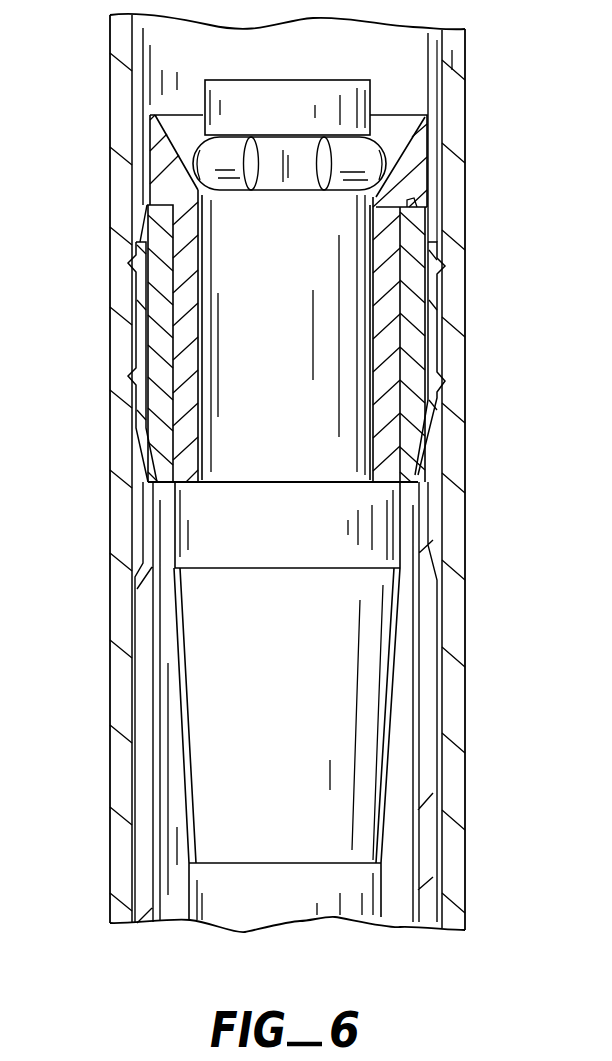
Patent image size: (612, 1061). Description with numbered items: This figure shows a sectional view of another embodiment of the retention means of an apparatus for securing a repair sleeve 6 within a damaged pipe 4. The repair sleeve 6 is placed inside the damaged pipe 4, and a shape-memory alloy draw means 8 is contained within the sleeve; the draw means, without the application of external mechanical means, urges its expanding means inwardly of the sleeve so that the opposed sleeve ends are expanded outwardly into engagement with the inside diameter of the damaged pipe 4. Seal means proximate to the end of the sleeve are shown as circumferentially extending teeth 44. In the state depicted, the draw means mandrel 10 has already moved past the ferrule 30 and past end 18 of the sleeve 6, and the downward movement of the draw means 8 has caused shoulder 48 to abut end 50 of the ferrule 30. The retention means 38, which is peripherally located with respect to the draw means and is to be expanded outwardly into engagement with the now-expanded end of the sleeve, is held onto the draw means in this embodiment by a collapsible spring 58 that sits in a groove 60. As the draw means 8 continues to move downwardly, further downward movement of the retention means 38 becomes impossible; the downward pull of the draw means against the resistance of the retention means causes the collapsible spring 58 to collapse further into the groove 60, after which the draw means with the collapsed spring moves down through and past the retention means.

The damaged pipe 4 is at (455, 760).
The repair sleeve 6 is at (140, 727).
The shape-memory alloy draw means 8 is at (353, 897).
The expanding means (draw means mandrel) 10 is at (275, 778).
The end of the sleeve 18 is at (480, 255).
The ferrule 30 is at (158, 402).
The retention means 38 is at (104, 255).
The circumferentially extending teeth 44 is at (438, 397).
The shoulder 48 is at (150, 208).
The end of the ferrule 50 is at (430, 228).
The collapsible spring 58 is at (288, 135).
The groove 60 is at (297, 155).